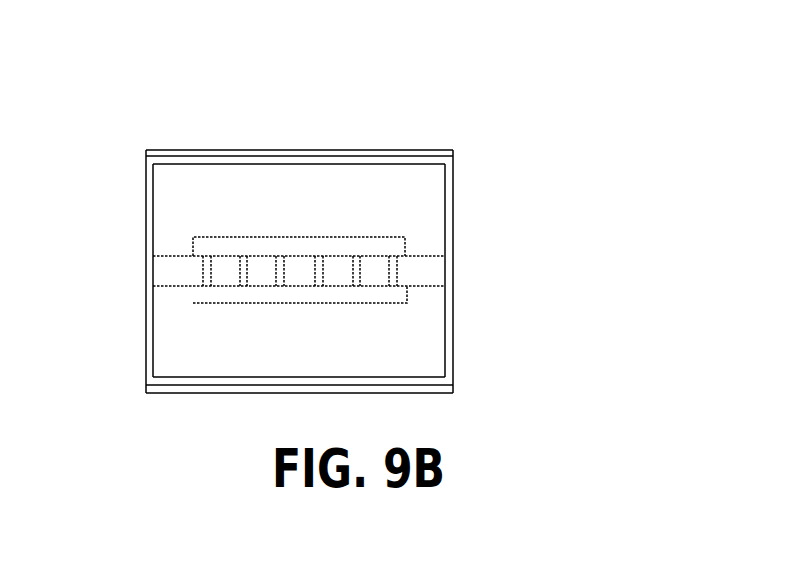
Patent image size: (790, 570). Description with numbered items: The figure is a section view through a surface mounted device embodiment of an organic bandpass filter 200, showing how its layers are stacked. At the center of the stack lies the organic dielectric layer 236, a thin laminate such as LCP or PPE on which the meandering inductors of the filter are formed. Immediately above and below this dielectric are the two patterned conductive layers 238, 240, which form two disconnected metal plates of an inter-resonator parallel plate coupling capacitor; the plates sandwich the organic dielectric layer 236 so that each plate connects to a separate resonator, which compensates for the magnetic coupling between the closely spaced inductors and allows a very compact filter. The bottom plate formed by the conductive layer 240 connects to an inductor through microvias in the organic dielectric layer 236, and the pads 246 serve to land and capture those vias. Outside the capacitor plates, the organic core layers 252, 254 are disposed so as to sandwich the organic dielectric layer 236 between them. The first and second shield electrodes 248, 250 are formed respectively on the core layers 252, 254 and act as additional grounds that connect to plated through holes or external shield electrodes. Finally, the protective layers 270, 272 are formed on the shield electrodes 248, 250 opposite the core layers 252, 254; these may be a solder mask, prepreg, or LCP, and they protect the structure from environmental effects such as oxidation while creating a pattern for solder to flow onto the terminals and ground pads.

The organic bandpass filter 200 is at (580, 90).
The organic dielectric layer 236 is at (417, 272).
The patterned conductive layer 238 is at (299, 227).
The patterned conductive layer 240 is at (270, 304).
The pads 246 is at (408, 259).
The first shield electrode 248 is at (288, 165).
The second shield electrode 250 is at (285, 376).
The organic core layer 252 is at (198, 211).
The organic core layer 254 is at (185, 353).
The protective layer 270 is at (454, 152).
The protective layer 272 is at (453, 386).